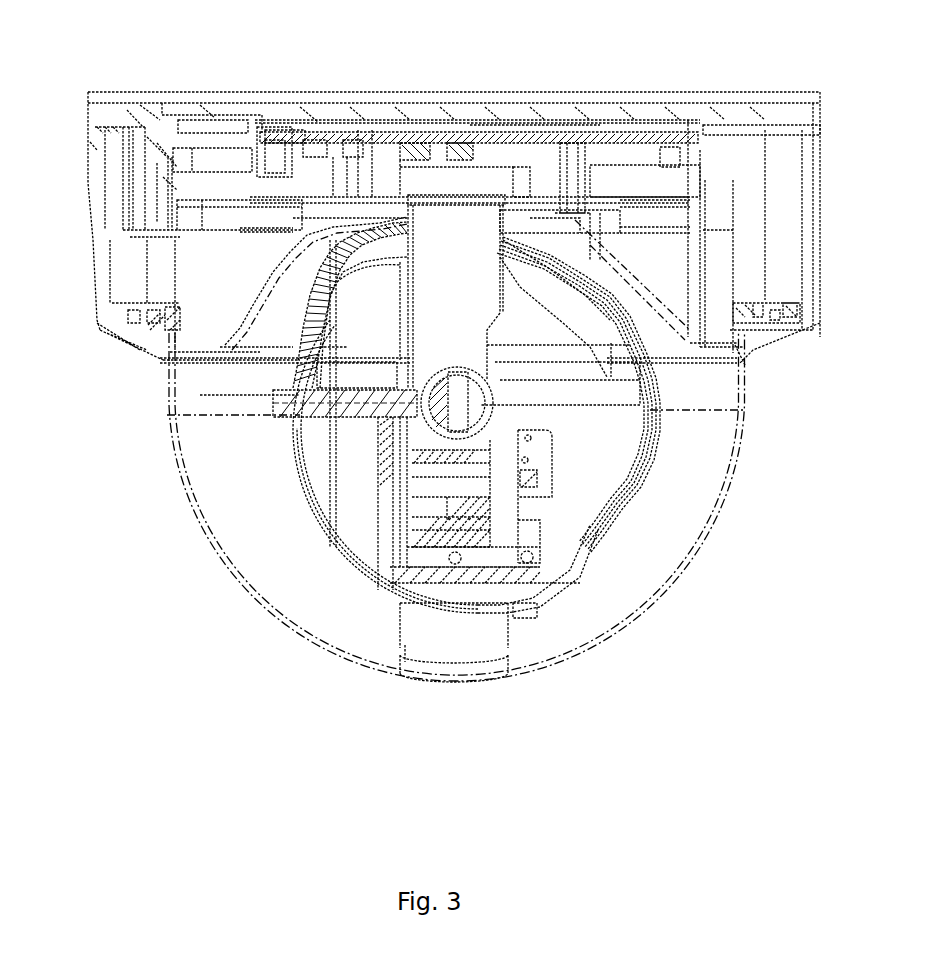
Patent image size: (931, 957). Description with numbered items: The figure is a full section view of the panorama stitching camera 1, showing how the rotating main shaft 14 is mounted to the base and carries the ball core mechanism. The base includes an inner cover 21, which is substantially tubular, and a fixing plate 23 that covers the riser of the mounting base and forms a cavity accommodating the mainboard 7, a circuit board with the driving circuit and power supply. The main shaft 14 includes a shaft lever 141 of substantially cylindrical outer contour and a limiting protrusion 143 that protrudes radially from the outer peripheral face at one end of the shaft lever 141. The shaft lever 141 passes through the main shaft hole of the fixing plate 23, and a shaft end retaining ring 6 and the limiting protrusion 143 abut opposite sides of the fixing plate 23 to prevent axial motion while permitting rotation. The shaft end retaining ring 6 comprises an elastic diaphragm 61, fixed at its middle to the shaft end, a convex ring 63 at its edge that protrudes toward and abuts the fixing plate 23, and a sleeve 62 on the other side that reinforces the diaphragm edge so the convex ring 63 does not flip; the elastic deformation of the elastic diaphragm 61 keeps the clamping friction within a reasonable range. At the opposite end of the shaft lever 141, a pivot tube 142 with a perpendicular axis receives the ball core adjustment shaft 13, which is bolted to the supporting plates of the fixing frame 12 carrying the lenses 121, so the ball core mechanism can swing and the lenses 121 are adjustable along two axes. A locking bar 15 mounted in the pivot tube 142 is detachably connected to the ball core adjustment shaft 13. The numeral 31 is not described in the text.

The panorama stitching camera 1 is at (465, 706).
The shaft end retaining ring 6 is at (388, 175).
The mainboard 7 is at (470, 137).
The fixing frame 12 is at (540, 561).
The ball core adjustment shaft 13 is at (477, 403).
The main shaft 14 is at (407, 260).
The locking bar 15 is at (303, 403).
The inner cover 21 is at (228, 338).
The fixing plate 23 is at (593, 207).
The transparent dome 31 is at (710, 540).
The elastic diaphragm 61 is at (377, 197).
The sleeve 62 is at (392, 178).
The convex ring 63 is at (533, 200).
The lenses 121 is at (433, 640).
The shaft lever 141 is at (413, 318).
The pivot tube 142 is at (493, 415).
The limiting protrusion 143 is at (385, 213).